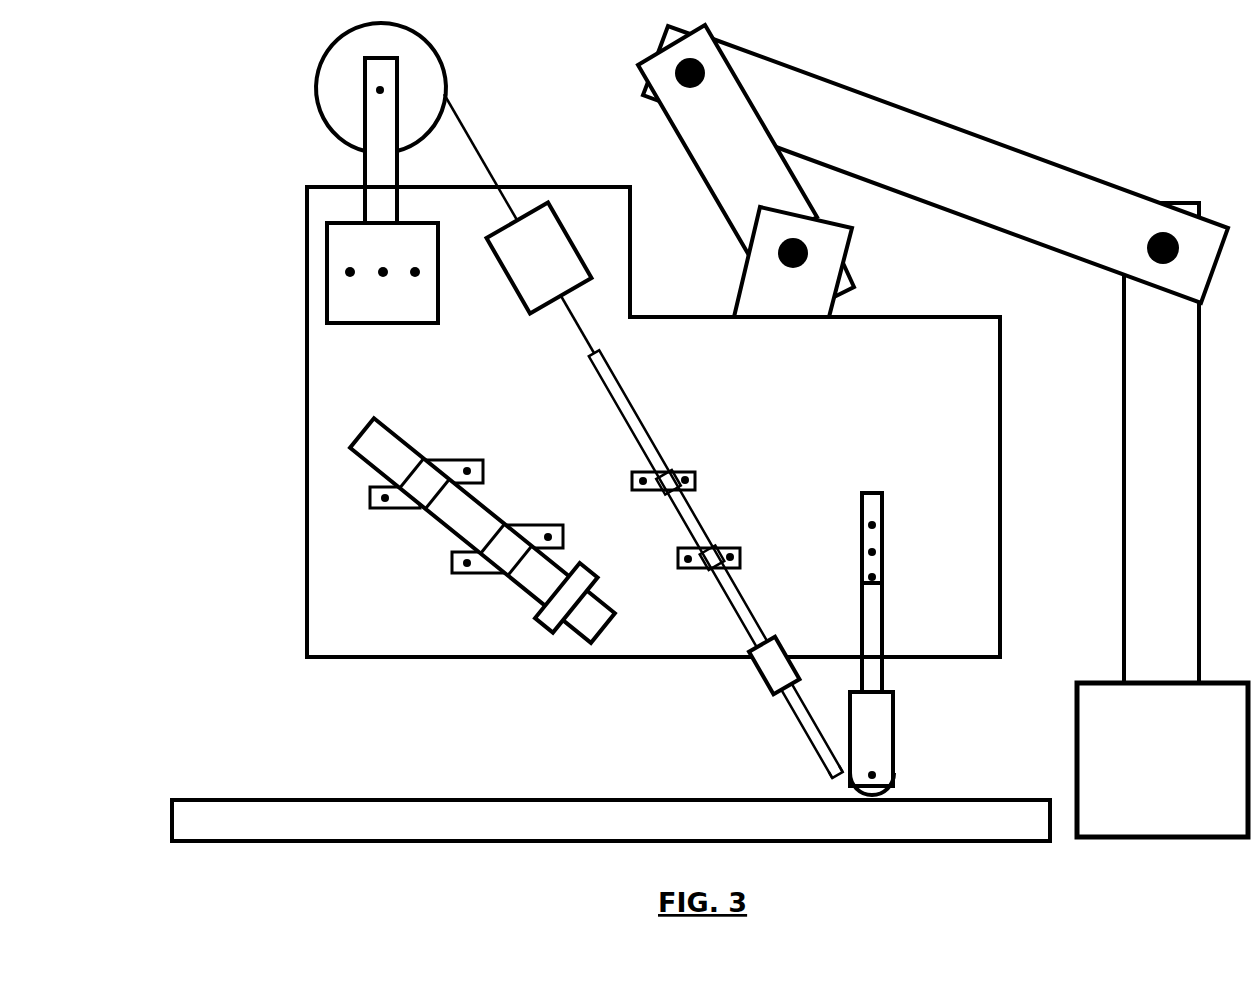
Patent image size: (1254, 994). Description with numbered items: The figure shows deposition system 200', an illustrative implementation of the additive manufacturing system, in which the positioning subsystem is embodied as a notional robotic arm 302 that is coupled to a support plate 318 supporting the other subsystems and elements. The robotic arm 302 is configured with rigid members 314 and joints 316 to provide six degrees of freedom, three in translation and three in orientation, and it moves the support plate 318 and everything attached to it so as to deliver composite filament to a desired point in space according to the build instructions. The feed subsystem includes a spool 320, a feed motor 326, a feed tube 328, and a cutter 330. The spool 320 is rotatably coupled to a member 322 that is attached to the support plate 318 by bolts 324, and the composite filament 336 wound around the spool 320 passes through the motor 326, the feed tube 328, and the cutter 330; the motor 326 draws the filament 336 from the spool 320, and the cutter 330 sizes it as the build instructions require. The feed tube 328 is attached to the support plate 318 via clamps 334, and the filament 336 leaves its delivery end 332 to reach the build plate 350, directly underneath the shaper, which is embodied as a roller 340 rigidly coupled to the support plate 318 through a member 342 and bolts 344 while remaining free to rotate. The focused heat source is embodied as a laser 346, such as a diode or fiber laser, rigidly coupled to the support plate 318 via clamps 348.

The deposition system 200' is at (133, 108).
The robotic arm 302 is at (1189, 126).
The rigid members 314 is at (975, 155).
The joints 316 is at (708, 72).
The support plate 318 is at (653, 422).
The spool 320 is at (314, 73).
The member 322 is at (372, 207).
The bolts 324 is at (340, 276).
The feed motor 326 is at (539, 258).
The feed tube 328 is at (624, 392).
The cutter 330 is at (772, 660).
The delivery end 332 is at (820, 775).
The clamps 334 is at (680, 470).
The composite filament 336 is at (482, 150).
The roller 340 is at (895, 775).
The member 342 is at (875, 628).
The bolts 344 is at (877, 522).
The laser 346 is at (480, 517).
The clamps 348 is at (447, 470).
The build plate 350 is at (611, 820).